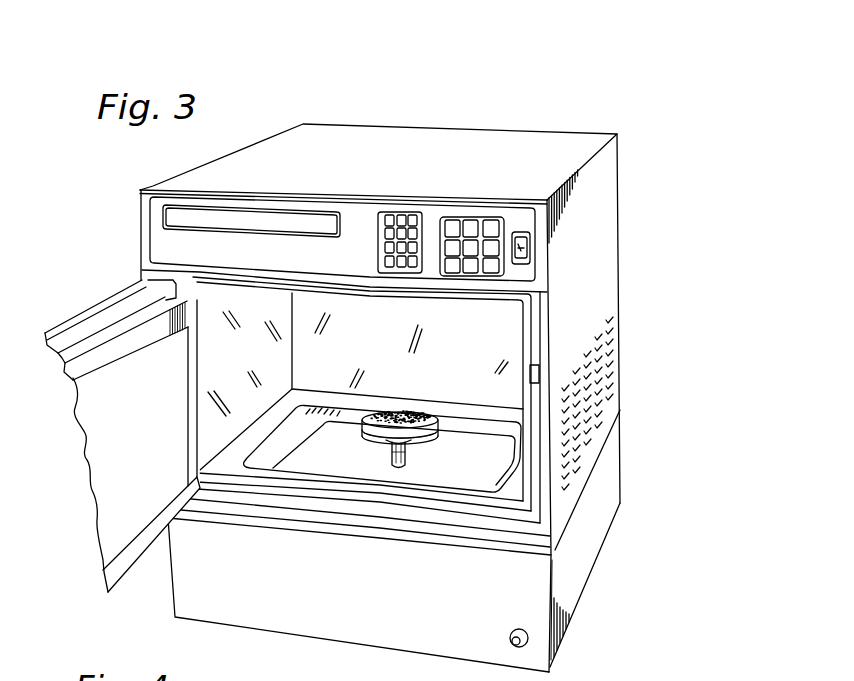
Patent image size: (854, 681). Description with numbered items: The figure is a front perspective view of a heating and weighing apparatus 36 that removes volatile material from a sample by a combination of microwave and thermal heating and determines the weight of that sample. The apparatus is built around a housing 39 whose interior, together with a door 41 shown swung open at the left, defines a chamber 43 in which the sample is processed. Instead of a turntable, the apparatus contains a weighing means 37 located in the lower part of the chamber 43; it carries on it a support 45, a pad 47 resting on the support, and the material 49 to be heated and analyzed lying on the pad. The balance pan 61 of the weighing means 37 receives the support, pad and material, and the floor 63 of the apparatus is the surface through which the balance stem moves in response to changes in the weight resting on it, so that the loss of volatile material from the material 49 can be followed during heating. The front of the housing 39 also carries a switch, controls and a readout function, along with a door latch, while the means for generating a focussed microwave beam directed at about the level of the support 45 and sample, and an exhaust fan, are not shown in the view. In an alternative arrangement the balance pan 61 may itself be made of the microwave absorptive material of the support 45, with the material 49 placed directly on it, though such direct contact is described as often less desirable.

The heating and weighing apparatus 36 is at (622, 452).
The housing 39 is at (606, 272).
The door 41 is at (118, 568).
The chamber 43 is at (493, 323).
The support 45 is at (378, 439).
The pad 47 is at (358, 425).
The material 49 is at (412, 410).
The weighing means 37 is at (408, 447).
The balance pan 61 is at (387, 445).
The floor 63 is at (474, 483).